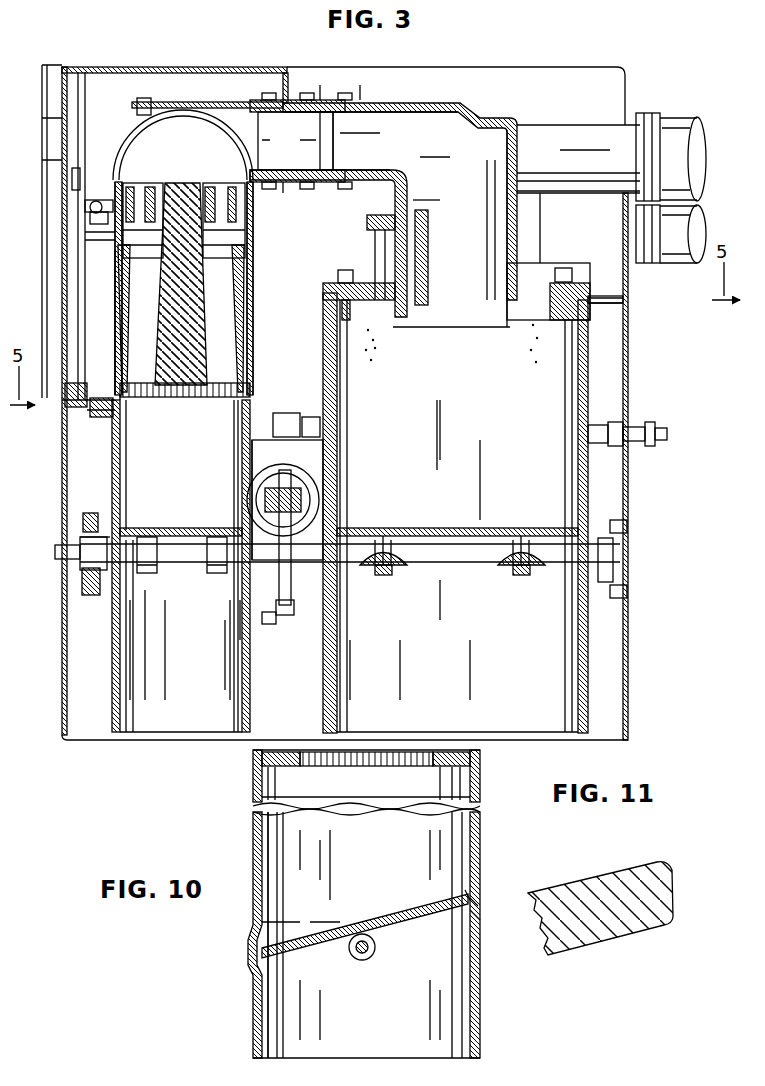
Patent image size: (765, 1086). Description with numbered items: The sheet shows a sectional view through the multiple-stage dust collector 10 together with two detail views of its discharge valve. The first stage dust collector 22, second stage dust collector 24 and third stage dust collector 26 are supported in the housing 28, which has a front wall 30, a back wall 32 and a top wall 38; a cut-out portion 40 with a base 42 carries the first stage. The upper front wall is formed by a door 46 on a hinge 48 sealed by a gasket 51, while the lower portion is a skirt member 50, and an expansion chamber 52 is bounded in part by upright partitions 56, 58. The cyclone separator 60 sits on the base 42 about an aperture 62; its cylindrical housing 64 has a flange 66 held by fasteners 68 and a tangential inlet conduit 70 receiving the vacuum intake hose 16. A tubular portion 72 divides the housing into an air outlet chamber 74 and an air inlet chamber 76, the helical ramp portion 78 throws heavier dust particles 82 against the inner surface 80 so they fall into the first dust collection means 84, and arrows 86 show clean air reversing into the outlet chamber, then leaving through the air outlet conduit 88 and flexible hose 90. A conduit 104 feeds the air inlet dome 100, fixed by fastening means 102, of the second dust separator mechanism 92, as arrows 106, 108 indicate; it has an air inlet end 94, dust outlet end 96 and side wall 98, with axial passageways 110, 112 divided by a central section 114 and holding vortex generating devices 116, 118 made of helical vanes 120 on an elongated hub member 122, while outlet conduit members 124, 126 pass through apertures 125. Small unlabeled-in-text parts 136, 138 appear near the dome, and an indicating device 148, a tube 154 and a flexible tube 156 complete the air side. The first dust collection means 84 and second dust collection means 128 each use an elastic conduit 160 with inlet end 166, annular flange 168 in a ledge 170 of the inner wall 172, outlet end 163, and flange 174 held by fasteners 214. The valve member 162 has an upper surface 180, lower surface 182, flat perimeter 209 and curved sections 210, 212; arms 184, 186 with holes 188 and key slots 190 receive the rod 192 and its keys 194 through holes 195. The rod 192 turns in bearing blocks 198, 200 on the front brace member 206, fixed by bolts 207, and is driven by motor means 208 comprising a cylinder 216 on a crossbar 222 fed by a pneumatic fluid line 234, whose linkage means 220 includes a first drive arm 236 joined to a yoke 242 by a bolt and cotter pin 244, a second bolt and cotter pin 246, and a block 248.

In FIG. 3, the multiple-stage dust collector 10 is at (663, 75).
In FIG. 3, the vacuum intake hose 16 is at (691, 122).
In FIG. 3, the first stage dust collector 22 is at (451, 104).
In FIG. 3, the second stage dust collector 24 is at (105, 240).
In FIG. 3, the third stage dust collector 26 is at (149, 92).
In FIG. 3, the housing 28 is at (636, 650).
In FIG. 3, the front wall 30 is at (62, 448).
In FIG. 3, the back wall 32 is at (630, 500).
In FIG. 3, the top wall 38 is at (226, 67).
In FIG. 3, the cut-out portion 40 is at (600, 85).
In FIG. 3, the base 42 is at (626, 301).
In FIG. 3, the door 46 is at (62, 124).
In FIG. 3, the hinge 48 is at (48, 148).
In FIG. 3, the skirt member 50 is at (62, 655).
In FIG. 3, the gasket 51 is at (73, 70).
In FIG. 3, the expansion chamber 52 is at (105, 95).
In FIG. 3, the upright partition 56 is at (289, 90).
In FIG. 3, the upright partition 58 is at (340, 82).
In FIG. 3, the cyclone separator 60 is at (500, 128).
In FIG. 3, the aperture 62 is at (510, 280).
In FIG. 3, the cylindrical housing 64 is at (372, 236).
In FIG. 3, the flange 66 is at (573, 288).
In FIG. 3, the fasteners 68 is at (558, 266).
In FIG. 3, the tangential inlet conduit 70 is at (578, 135).
In FIG. 3, the tubular portion 72 is at (519, 145).
In FIG. 3, the air outlet chamber 74 is at (474, 254).
In FIG. 3, the air inlet chamber 76 is at (386, 242).
In FIG. 3, the helical ramp portion 78 is at (400, 195).
In FIG. 3, the inner surface 80 is at (370, 222).
In FIG. 3, the heavier dust particles 82 is at (375, 345).
In FIG. 3, the first dust collection means 84 is at (602, 510).
In FIG. 10, the first dust collection means 84 is at (496, 846).
In FIG. 3, the arrows 86 is at (425, 350).
In FIG. 3, the air outlet conduit 88 is at (380, 110).
In FIG. 3, the flexible hose 90 is at (318, 100).
In FIG. 3, the second dust separator mechanism 92 is at (110, 226).
In FIG. 3, the air inlet end 94 is at (183, 178).
In FIG. 3, the dust outlet end 96 is at (186, 400).
In FIG. 3, the side wall 98 is at (125, 262).
In FIG. 3, the air inlet dome 100 is at (183, 107).
In FIG. 3, the fastening means 102 is at (290, 195).
In FIG. 3, the conduit 104 is at (306, 154).
In FIG. 3, the arrows 106 is at (414, 152).
In FIG. 3, the arrows 108 is at (147, 165).
In FIG. 3, the axial passageway 110 is at (141, 400).
In FIG. 3, the axial passageway 112 is at (223, 400).
In FIG. 3, the central section 114 is at (164, 420).
In FIG. 3, the vortex generating device 116 is at (125, 180).
In FIG. 3, the vortex generating device 118 is at (224, 220).
In FIG. 3, the helical vanes 120 is at (146, 220).
In FIG. 3, the elongated hub member 122 is at (85, 212).
In FIG. 3, the outlet conduit member 124 is at (125, 292).
In FIG. 3, the apertures 125 is at (136, 300).
In FIG. 3, the outlet conduit member 126 is at (248, 262).
In FIG. 3, the second dust collection means 128 is at (128, 745).
In FIG. 3, the nut 136 is at (138, 104).
In FIG. 3, the bolt 138 is at (152, 104).
In FIG. 3, the indicating device 148 is at (75, 182).
In FIG. 3, the tube 154 is at (634, 225).
In FIG. 3, the flexible tube 156 is at (694, 290).
In FIG. 3, the conduit 160 is at (112, 692).
In FIG. 3, the valve member 162 is at (158, 560).
In FIG. 10, the valve member 162 is at (320, 960).
In FIG. 11, the valve member 162 is at (558, 960).
In FIG. 3, the outlet end 163 is at (221, 742).
In FIG. 10, the outlet end 163 is at (480, 1062).
In FIG. 10, the inlet end 166 is at (480, 752).
In FIG. 10, the annular flange 168 is at (290, 765).
In FIG. 10, the ledge 170 is at (468, 772).
In FIG. 3, the inner wall 172 is at (186, 742).
In FIG. 10, the inner wall 172 is at (262, 850).
In FIG. 3, the flange 174 is at (86, 420).
In FIG. 3, the upper surface 180 is at (205, 528).
In FIG. 10, the upper surface 180 is at (402, 908).
In FIG. 11, the upper surface 180 is at (606, 878).
In FIG. 3, the lower surface 182 is at (165, 575).
In FIG. 10, the lower surface 182 is at (430, 918).
In FIG. 11, the lower surface 182 is at (600, 933).
In FIG. 3, the arm 184 is at (162, 575).
In FIG. 3, the arm 186 is at (216, 580).
In FIG. 10, the arm 186 is at (365, 960).
In FIG. 3, the hole 188 is at (376, 570).
In FIG. 10, the hole 188 is at (355, 935).
In FIG. 3, the key slot 190 is at (389, 577).
In FIG. 10, the key slot 190 is at (375, 950).
In FIG. 3, the rod 192 is at (450, 575).
In FIG. 10, the rod 192 is at (350, 948).
In FIG. 3, the keys 194 is at (386, 560).
In FIG. 3, the holes 195 is at (146, 537).
In FIG. 3, the bearing block 198 is at (80, 590).
In FIG. 3, the bearing block 200 is at (630, 565).
In FIG. 3, the front brace member 206 is at (85, 520).
In FIG. 3, the bolts 207 is at (82, 572).
In FIG. 3, the motor means 208 is at (322, 455).
In FIG. 3, the perimeter 209 is at (82, 535).
In FIG. 10, the perimeter 209 is at (480, 906).
In FIG. 11, the perimeter 209 is at (675, 885).
In FIG. 10, the curved section 210 is at (480, 893).
In FIG. 11, the curved section 210 is at (660, 862).
In FIG. 10, the curved section 212 is at (481, 920).
In FIG. 11, the curved section 212 is at (670, 922).
In FIG. 3, the fasteners 214 is at (97, 432).
In FIG. 3, the cylinder 216 is at (320, 440).
In FIG. 3, the linkage means 220 is at (288, 648).
In FIG. 3, the crossbar 222 is at (325, 480).
In FIG. 3, the pneumatic fluid line 234 is at (312, 418).
In FIG. 3, the first drive arm 236 is at (300, 610).
In FIG. 3, the yoke 242 is at (262, 470).
In FIG. 3, the bolt and cotter pin 244 is at (232, 481).
In FIG. 3, the bolt and cotter pin 246 is at (249, 625).
In FIG. 3, the block 248 is at (250, 612).